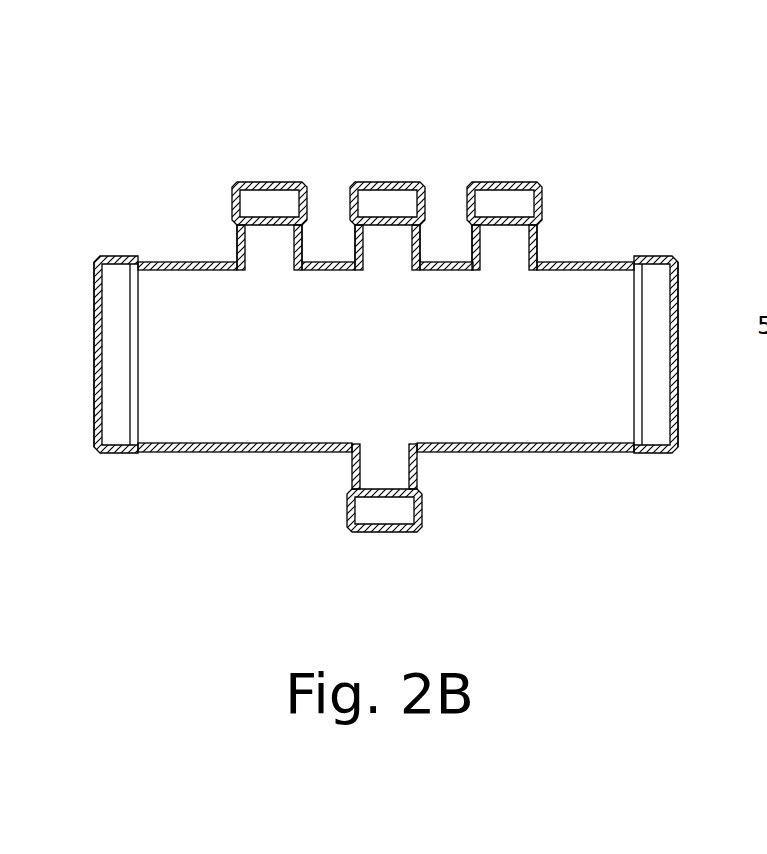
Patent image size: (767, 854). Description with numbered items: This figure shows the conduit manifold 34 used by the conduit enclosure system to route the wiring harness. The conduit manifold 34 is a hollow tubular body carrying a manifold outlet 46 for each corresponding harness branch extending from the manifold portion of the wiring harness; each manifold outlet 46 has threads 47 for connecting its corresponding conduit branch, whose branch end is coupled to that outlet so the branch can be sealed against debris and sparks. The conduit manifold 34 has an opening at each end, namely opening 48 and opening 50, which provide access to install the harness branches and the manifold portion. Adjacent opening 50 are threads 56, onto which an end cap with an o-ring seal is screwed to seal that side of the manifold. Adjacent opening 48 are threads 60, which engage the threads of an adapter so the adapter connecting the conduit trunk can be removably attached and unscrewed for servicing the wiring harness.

The conduit manifold 34 is at (625, 78).
The manifold outlet 46 is at (237, 250).
The threads 47 is at (232, 197).
The opening 48 is at (82, 405).
The opening 50 is at (690, 413).
The threads 56 is at (652, 457).
The threads 60 is at (117, 455).